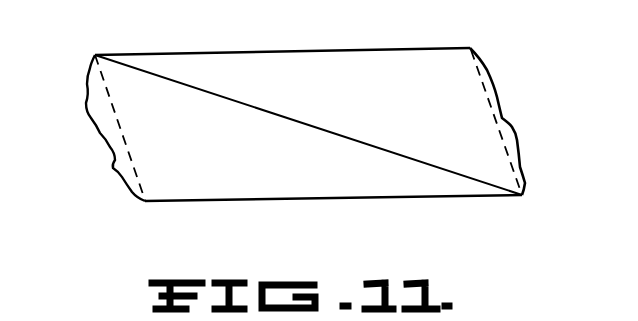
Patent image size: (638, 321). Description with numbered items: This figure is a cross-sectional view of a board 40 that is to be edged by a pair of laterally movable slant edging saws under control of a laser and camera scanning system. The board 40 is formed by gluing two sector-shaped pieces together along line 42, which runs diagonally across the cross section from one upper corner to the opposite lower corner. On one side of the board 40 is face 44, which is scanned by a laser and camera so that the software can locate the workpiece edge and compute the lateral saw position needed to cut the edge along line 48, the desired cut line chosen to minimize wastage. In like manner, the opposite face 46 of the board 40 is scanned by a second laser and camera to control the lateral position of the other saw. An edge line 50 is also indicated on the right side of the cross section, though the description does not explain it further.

The board 40 is at (347, 50).
The glue line 42 is at (230, 98).
The face 44 is at (113, 168).
The opposite face 46 is at (517, 133).
The cut line 48 is at (100, 83).
The right hidden edge 50 is at (482, 73).